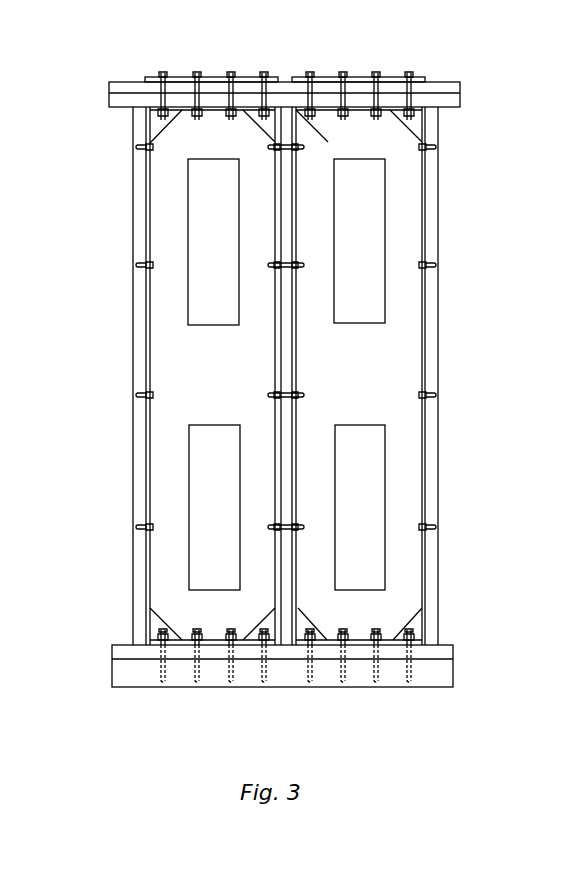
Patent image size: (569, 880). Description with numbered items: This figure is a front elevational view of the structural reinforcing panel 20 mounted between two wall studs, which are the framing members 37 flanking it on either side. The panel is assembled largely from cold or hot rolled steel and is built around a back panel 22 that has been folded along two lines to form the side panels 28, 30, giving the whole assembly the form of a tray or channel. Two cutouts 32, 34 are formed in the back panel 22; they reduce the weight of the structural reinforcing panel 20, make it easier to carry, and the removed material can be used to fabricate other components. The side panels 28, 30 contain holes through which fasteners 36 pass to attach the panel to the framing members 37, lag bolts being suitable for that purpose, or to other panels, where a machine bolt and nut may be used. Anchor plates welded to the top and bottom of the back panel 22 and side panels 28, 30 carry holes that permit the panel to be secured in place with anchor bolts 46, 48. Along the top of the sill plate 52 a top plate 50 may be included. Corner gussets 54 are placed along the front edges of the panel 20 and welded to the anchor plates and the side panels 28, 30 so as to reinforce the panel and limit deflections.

The structural reinforcing panel 20 is at (106, 144).
The back panel 22 is at (407, 570).
The side panel 28 is at (275, 355).
The side panel 30 is at (146, 210).
The cutout 32 is at (202, 325).
The cutout 34 is at (230, 423).
The fastener 36 is at (150, 397).
The framing member 37 is at (138, 313).
The anchor bolt 46 is at (162, 665).
The anchor bolt 48 is at (407, 72).
The top plate 50 is at (325, 77).
The sill plate 52 is at (448, 90).
The corner gusset 54 is at (162, 630).